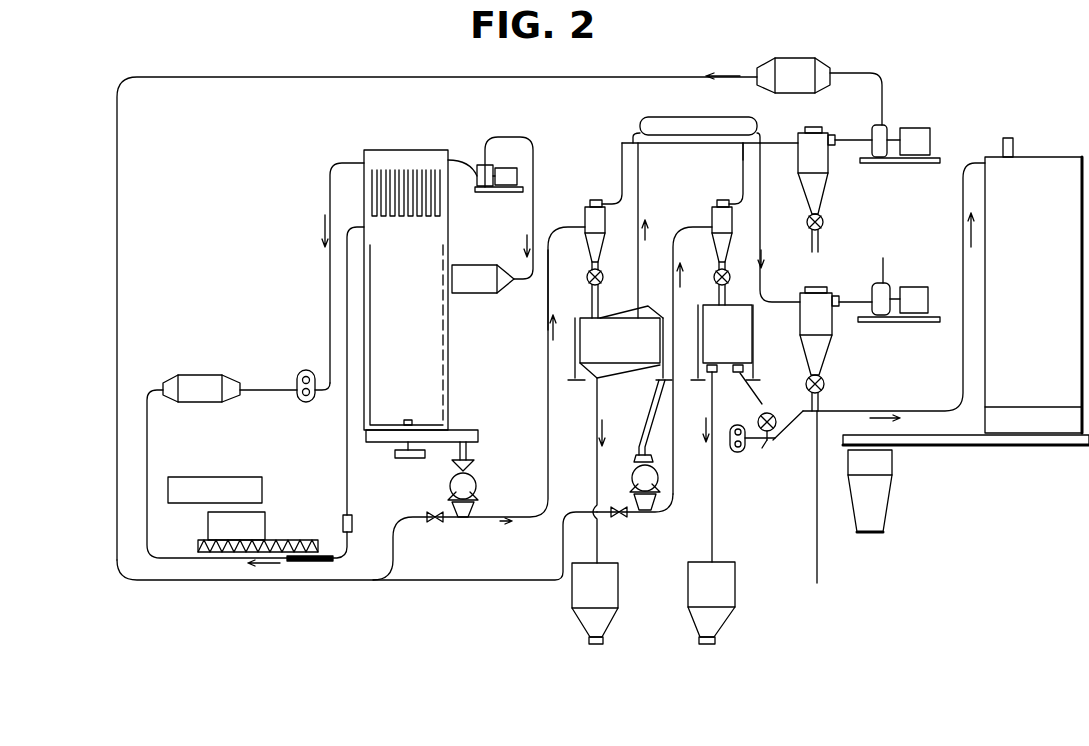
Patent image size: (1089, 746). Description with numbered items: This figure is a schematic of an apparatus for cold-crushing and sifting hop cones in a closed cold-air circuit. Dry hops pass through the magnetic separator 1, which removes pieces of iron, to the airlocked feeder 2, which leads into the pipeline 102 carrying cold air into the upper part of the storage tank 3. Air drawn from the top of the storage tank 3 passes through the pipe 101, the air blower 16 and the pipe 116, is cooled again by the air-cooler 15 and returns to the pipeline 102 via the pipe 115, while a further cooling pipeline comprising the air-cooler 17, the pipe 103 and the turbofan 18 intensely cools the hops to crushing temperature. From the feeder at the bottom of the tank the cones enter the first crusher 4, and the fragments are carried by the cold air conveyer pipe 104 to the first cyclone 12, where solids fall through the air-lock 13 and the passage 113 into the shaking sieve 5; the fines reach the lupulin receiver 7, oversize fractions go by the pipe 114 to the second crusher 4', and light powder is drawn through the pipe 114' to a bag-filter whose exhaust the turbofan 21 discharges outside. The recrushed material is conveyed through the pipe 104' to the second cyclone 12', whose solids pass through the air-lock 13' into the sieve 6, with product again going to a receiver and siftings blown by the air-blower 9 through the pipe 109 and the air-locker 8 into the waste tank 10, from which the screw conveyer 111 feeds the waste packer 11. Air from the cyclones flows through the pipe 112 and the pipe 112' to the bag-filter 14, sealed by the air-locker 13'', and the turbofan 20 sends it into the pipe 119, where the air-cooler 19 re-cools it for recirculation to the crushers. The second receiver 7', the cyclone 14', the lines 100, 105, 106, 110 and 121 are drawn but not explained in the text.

The magnetic separator 1 is at (221, 501).
The feeder 2 is at (244, 537).
The storage tank 3 is at (410, 327).
The first crusher 4 is at (476, 479).
The second crusher 4' is at (635, 479).
The shaking sieve 5 is at (628, 348).
The sieve 6 is at (735, 345).
The lupulin receiver 7 is at (603, 604).
The collection tank B 7' is at (723, 603).
The air-locker 8 is at (771, 457).
The air-blower 9 is at (737, 452).
The waste tank 10 is at (1046, 288).
The waste packer 11 is at (878, 480).
The first cyclone 12 is at (610, 206).
The second cyclone 12' is at (752, 206).
The air-lock 13 is at (610, 262).
The air-lock 13' is at (708, 286).
The air-locker 13'' is at (836, 229).
The bag-filter 14 is at (816, 170).
The cyclone 14' is at (835, 349).
The air-cooler 15 is at (201, 378).
The air blower 16 is at (306, 370).
The air-cooler 17 is at (483, 289).
The turbofan 18 is at (504, 168).
The air-cooler 19 is at (808, 84).
The turbofan 20 is at (915, 132).
The turbofan 21 is at (915, 290).
The feed nozzle 100 is at (318, 562).
The pipe 101 is at (330, 300).
The pipeline 102 is at (347, 455).
The pipe 103 is at (533, 210).
The cold air conveyer pipe 104 is at (521, 302).
The pipe 104' is at (685, 344).
The discharge line 105 is at (597, 463).
The discharge line 106 is at (712, 392).
The pipe 109 is at (760, 412).
The gas duct 110 is at (930, 400).
The screw conveyer 111 is at (948, 447).
The pipe 112 is at (710, 217).
The pipe 112' is at (721, 167).
The passage 113 is at (618, 303).
The pipe 114 is at (742, 280).
The pipe 114' is at (788, 222).
The pipe 115 is at (147, 430).
The pipe 116 is at (290, 386).
The pipe 119 is at (517, 78).
The gas line 121 is at (855, 300).